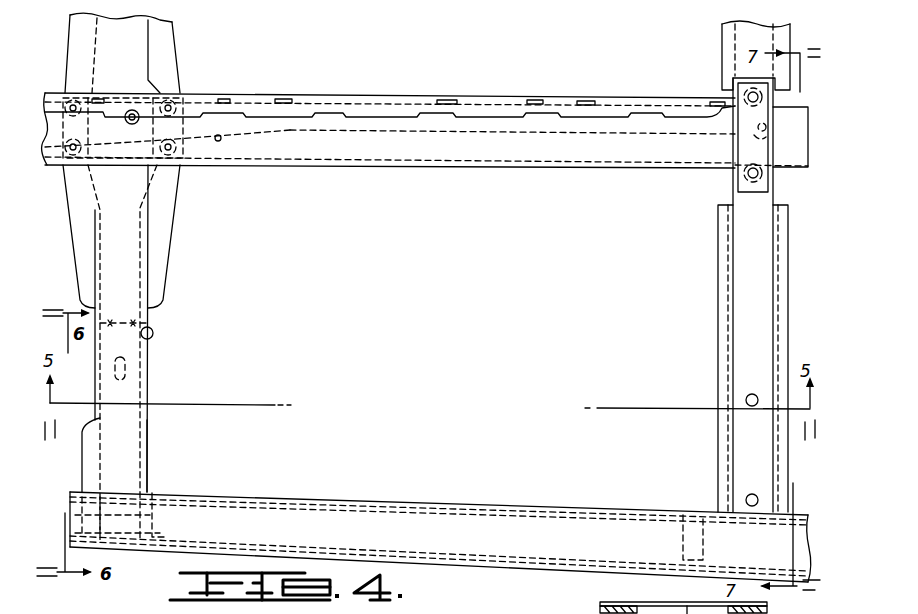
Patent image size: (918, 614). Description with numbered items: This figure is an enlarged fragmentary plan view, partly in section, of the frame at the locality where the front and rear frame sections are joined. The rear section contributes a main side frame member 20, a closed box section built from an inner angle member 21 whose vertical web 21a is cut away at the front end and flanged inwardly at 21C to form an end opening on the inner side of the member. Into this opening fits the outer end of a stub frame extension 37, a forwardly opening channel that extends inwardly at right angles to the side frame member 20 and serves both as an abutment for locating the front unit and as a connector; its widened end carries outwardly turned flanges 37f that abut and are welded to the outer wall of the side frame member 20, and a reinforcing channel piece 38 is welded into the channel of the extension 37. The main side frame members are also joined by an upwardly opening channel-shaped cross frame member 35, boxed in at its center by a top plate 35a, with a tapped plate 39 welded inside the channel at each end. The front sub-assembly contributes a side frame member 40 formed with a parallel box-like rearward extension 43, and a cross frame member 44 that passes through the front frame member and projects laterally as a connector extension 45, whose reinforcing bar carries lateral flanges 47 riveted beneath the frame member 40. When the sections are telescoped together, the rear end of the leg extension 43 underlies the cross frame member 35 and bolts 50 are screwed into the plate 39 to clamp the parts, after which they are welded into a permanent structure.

The side frame member 20 is at (548, 574).
The inner angle member 21 is at (267, 493).
The vertical web 21a is at (188, 490).
The inwardly turned flange 21C is at (150, 514).
The cross frame member 35 is at (742, 247).
The top plate 35a is at (727, 38).
The stub frame extension 37 is at (152, 452).
The outwardly turned flange 37f is at (163, 537).
The reinforcing channel piece 38 is at (84, 463).
The plate 39 is at (747, 150).
The side frame member of front sub-assembly 40 is at (47, 86).
The rearward extension 43 is at (488, 95).
The cross frame member 44 is at (148, 40).
The connector extension 45 is at (130, 298).
The lateral flange 47 is at (171, 215).
The bolt 50 is at (762, 177).